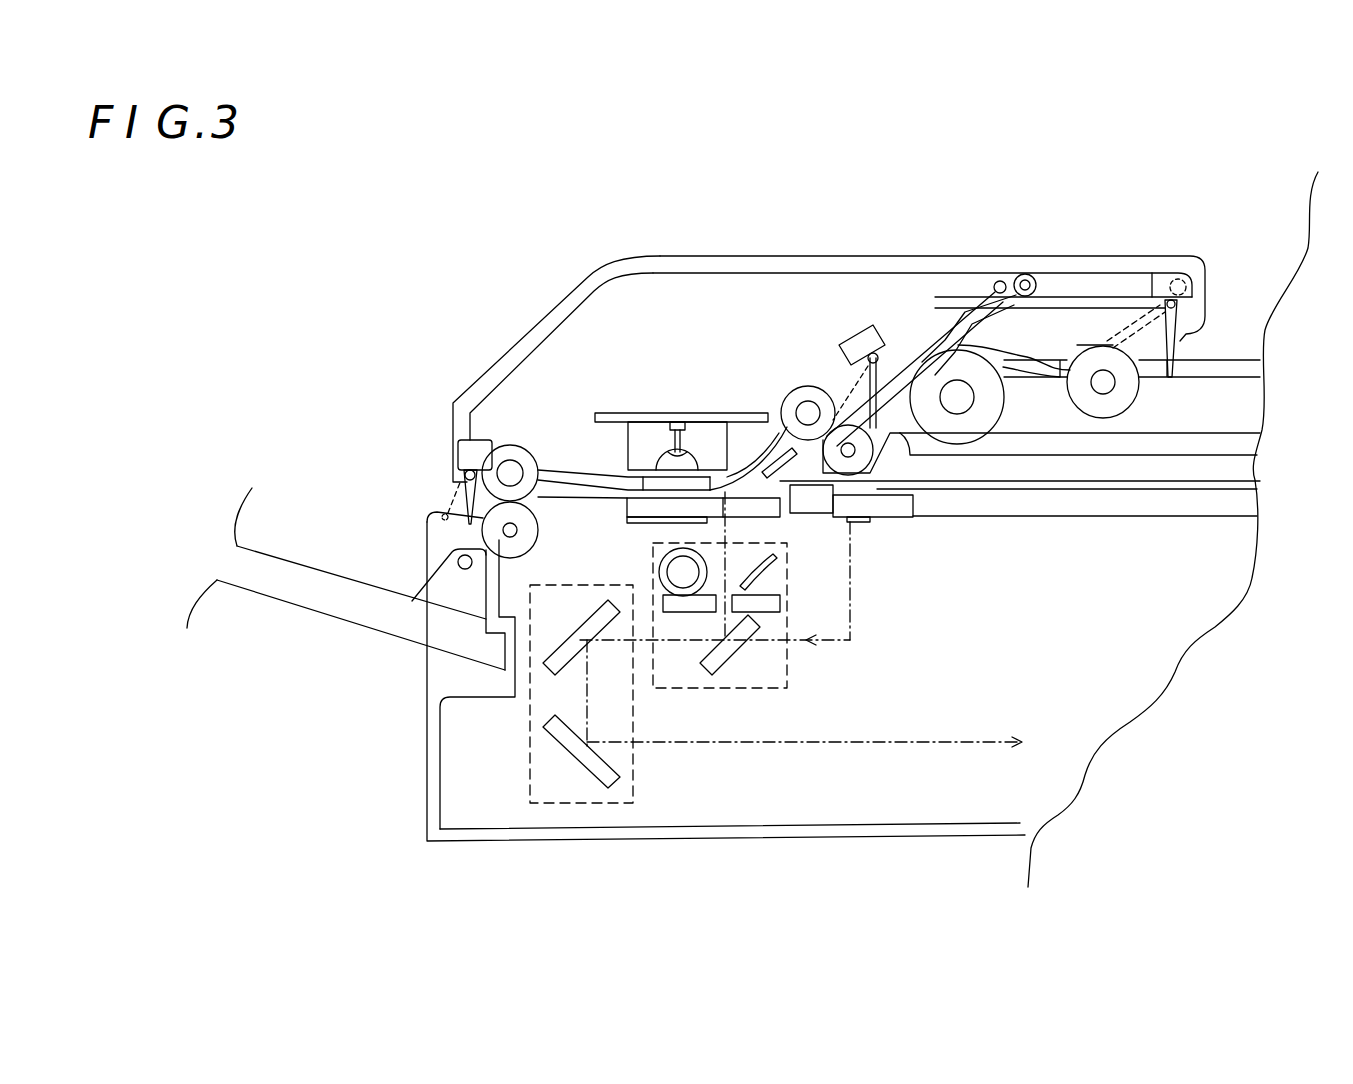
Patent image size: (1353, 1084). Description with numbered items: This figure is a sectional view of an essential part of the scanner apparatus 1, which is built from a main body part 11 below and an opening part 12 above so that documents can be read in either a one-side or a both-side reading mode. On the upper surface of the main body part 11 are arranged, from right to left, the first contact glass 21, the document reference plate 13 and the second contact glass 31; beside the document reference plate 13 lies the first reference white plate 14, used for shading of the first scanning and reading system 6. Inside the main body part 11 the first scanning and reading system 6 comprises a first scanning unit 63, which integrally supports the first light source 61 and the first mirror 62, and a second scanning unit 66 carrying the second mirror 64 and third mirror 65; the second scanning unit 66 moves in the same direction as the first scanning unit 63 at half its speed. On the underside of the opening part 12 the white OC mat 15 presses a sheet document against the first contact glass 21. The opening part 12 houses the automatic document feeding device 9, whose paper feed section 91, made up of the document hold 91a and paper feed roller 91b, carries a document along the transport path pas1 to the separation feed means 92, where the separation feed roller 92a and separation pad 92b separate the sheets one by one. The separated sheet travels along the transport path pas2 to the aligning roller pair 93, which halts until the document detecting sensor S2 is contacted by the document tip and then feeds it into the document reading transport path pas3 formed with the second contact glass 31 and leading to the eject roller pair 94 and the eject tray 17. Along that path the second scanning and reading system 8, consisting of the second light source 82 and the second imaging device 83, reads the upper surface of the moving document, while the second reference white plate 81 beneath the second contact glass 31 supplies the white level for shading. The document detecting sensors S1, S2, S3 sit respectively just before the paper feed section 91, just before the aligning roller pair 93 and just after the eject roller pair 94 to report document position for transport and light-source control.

The scanner apparatus 1 is at (356, 187).
The first scanning and reading system 6 is at (700, 770).
The second scanning and reading system 8 is at (577, 393).
The automatic document feeding device 9 is at (907, 308).
The main body part 11 is at (874, 840).
The opening part 12 is at (795, 254).
The document reference plate 13 is at (812, 513).
The first reference white plate 14 is at (860, 522).
The OC mat 15 is at (1187, 468).
The eject tray 17 is at (290, 577).
The first contact glass 21 is at (1125, 515).
The second contact glass 31 is at (620, 500).
The first light source 61 is at (660, 570).
The first mirror 62 is at (742, 655).
The first scanning unit 63 is at (787, 660).
The second mirror 64 is at (573, 632).
The third mirror 65 is at (588, 757).
The second scanning unit 66 is at (600, 805).
The second reference white plate 81 is at (605, 533).
The second light source 82 is at (681, 325).
The second imaging device 83 is at (665, 442).
The paper feed section 91 is at (1114, 290).
The document hold 91a is at (1215, 325).
The paper feed roller 91b is at (1140, 407).
The separation feed means 92 is at (950, 300).
The separation feed roller 92a is at (1007, 403).
The separation pad 92b is at (1007, 393).
The aligning roller pair 93 is at (795, 386).
The eject roller pair 94 is at (515, 447).
The document detecting sensor S1 is at (1180, 341).
The document detecting sensor S2 is at (908, 470).
The document detecting sensor S3 is at (470, 522).
The transport path pas1 is at (1050, 333).
The transport path pas2 is at (888, 312).
The document reading transport path pas3 is at (770, 487).